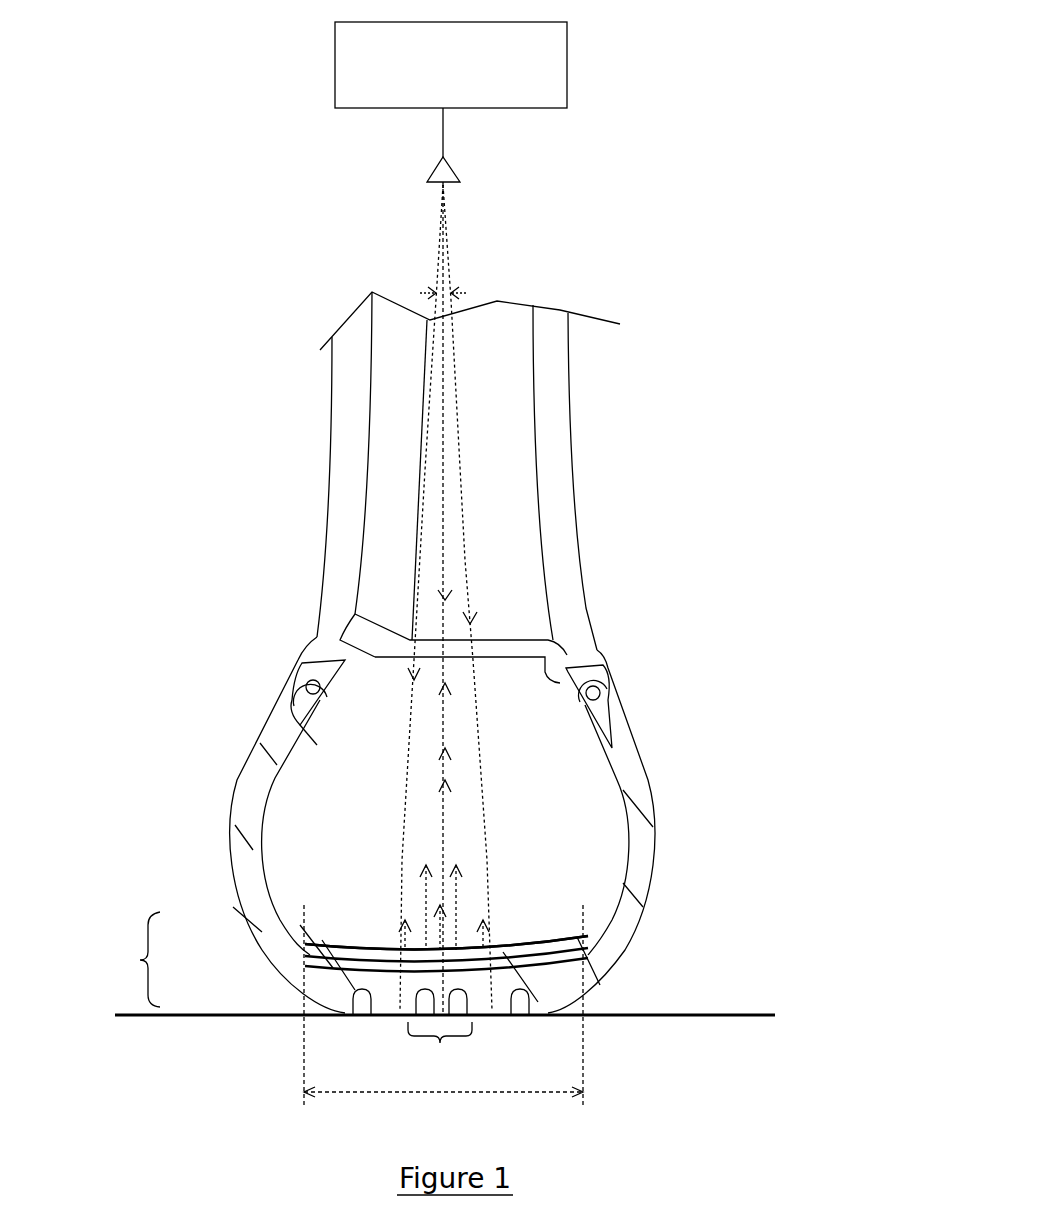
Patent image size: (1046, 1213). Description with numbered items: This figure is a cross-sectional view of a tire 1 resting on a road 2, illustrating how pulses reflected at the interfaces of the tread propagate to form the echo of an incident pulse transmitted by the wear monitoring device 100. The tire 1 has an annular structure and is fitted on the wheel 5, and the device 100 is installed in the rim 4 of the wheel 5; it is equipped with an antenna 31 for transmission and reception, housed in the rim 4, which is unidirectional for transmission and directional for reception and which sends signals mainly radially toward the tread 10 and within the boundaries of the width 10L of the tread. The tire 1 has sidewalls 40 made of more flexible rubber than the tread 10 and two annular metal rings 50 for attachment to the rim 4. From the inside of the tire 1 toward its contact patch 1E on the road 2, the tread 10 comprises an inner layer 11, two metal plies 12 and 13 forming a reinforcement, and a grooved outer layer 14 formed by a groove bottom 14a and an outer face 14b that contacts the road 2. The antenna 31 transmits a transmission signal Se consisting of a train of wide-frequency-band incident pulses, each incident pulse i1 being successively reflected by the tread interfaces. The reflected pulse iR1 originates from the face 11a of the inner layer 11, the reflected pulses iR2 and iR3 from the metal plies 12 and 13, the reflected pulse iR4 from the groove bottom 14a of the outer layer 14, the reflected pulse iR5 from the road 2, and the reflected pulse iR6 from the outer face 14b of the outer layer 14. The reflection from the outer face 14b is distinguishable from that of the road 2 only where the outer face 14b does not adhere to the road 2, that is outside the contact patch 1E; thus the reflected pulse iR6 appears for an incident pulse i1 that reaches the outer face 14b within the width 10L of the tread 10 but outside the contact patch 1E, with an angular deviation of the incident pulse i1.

The wear monitoring device 100 is at (322, 10).
The antenna 31 is at (458, 160).
The wheel 5 is at (698, 335).
The rim 4 is at (315, 475).
The tire 1 is at (233, 745).
The annular metal rings 50 is at (610, 667).
The sidewalls 40 is at (630, 833).
The tread 10 is at (134, 959).
The inner layer 11 is at (310, 945).
The face of the inner layer 11a is at (395, 950).
The metal ply 12 is at (592, 944).
The metal ply 13 is at (592, 968).
The grooved outer layer 14 is at (300, 960).
The groove bottom 14a is at (545, 1010).
The outer face 14b is at (330, 1010).
The road 2 is at (722, 1013).
The width of the tread 10L is at (480, 1090).
The contact patch 1E is at (440, 1052).
The incident pulse i1 is at (457, 478).
The transmission signal Se is at (460, 540).
The reflected pulse iR1 is at (452, 696).
The reflected pulse iR2 is at (455, 762).
The reflected pulse iR3 is at (455, 795).
The reflected pulse iR4 is at (460, 880).
The reflected pulse iR5 is at (455, 918).
The reflected pulse iR6 is at (492, 930).